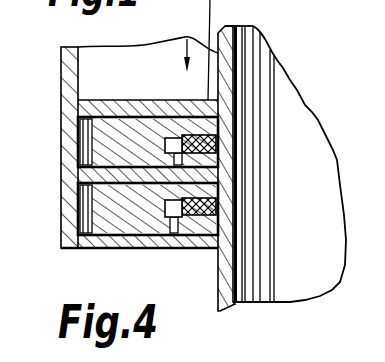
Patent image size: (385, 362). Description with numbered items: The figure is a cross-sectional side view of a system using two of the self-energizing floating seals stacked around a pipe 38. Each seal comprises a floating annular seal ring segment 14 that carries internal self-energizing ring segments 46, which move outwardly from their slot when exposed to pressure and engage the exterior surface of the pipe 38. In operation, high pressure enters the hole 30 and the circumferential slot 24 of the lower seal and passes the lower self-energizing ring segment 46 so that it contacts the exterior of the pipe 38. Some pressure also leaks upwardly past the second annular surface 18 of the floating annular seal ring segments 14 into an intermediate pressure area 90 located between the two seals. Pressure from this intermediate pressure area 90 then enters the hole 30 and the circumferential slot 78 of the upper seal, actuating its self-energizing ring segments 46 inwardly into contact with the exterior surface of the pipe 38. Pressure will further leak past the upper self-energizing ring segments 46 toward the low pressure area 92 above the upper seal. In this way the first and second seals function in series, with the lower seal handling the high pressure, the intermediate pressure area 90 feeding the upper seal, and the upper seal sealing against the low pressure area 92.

The floating annular seal ring segment 14 is at (107, 137).
The second annular surface 18 is at (228, 185).
The circumferential slot 24 is at (150, 222).
The hole 30 is at (172, 166).
The pipe 38 is at (228, 68).
The self-energizing ring segment 46 is at (205, 205).
The circumferential slot of upper seal 78 is at (170, 136).
The intermediate pressure area 90 is at (226, 168).
The low pressure area 92 is at (183, 36).